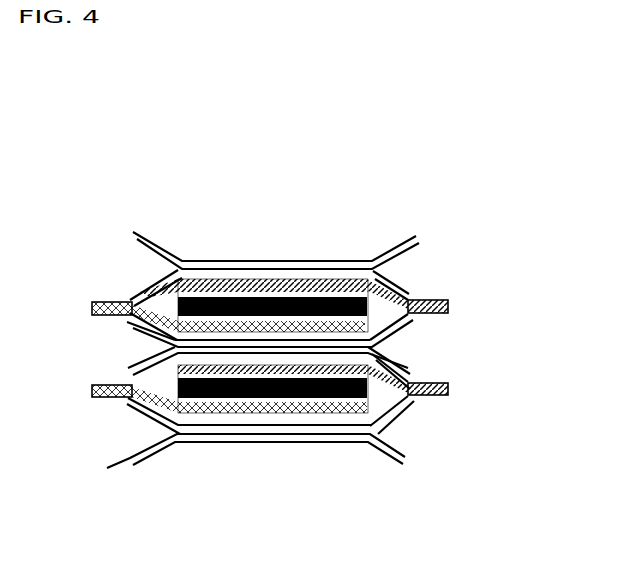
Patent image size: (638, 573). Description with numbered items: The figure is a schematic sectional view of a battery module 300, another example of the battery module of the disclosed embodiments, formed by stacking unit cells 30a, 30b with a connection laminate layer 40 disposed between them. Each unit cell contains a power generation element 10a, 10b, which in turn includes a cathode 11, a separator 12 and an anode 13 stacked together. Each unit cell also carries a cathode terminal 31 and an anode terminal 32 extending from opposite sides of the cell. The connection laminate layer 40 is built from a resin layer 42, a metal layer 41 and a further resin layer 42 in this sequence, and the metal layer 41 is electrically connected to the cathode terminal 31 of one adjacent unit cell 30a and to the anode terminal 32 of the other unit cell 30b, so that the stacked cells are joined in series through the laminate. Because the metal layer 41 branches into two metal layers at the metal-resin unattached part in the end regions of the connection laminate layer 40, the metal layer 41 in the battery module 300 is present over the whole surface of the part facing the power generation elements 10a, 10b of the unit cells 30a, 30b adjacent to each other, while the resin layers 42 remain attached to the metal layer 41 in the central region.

The battery module 300 is at (115, 114).
The connection laminate layer 40 is at (305, 197).
The metal layer 41 is at (263, 262).
The resin layer 42 is at (247, 272).
The power generation element 10a is at (450, 190).
The power generation element 10b is at (422, 508).
The cathode 11 is at (322, 282).
The separator 12 is at (347, 296).
The anode 13 is at (378, 284).
The unit cell 30a is at (523, 242).
The unit cell 30b is at (523, 347).
The cathode terminal 31 is at (447, 303).
The anode terminal 32 is at (100, 301).